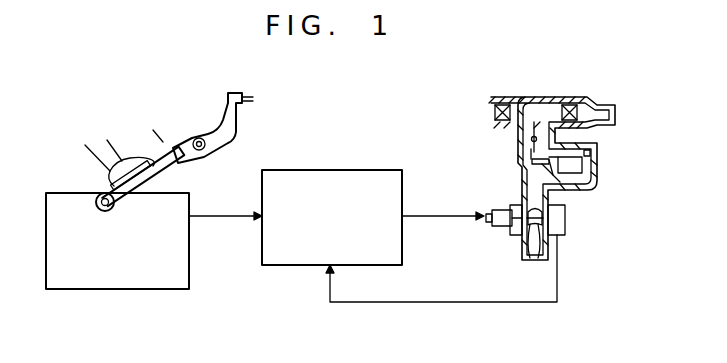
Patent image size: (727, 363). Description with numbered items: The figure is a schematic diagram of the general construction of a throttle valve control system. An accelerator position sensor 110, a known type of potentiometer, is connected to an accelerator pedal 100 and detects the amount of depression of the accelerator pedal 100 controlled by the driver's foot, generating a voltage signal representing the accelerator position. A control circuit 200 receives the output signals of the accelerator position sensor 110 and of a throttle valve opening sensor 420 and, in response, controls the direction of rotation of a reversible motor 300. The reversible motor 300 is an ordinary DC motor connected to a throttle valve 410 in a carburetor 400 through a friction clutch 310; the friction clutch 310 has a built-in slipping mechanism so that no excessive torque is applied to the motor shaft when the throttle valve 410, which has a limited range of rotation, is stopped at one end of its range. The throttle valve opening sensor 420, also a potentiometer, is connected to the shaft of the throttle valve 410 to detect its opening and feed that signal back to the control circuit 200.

The accelerator pedal 100 is at (168, 152).
The accelerator position sensor 110 is at (137, 290).
The control circuit 200 is at (320, 170).
The reversible motor 300 is at (502, 212).
The friction clutch 310 is at (517, 205).
The carburetor 400 is at (602, 170).
The throttle valve 410 is at (533, 262).
The throttle valve opening sensor 420 is at (565, 218).